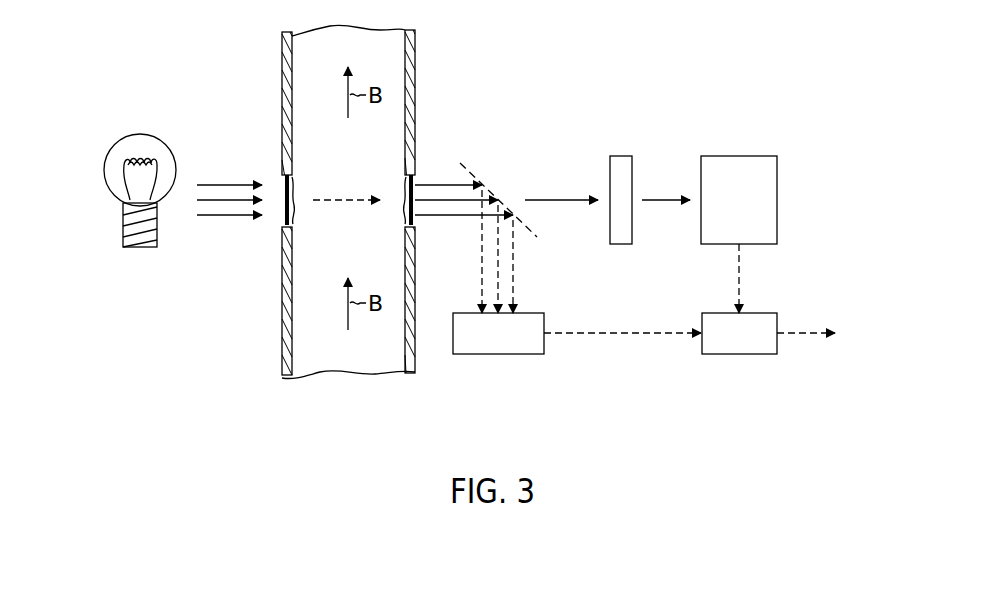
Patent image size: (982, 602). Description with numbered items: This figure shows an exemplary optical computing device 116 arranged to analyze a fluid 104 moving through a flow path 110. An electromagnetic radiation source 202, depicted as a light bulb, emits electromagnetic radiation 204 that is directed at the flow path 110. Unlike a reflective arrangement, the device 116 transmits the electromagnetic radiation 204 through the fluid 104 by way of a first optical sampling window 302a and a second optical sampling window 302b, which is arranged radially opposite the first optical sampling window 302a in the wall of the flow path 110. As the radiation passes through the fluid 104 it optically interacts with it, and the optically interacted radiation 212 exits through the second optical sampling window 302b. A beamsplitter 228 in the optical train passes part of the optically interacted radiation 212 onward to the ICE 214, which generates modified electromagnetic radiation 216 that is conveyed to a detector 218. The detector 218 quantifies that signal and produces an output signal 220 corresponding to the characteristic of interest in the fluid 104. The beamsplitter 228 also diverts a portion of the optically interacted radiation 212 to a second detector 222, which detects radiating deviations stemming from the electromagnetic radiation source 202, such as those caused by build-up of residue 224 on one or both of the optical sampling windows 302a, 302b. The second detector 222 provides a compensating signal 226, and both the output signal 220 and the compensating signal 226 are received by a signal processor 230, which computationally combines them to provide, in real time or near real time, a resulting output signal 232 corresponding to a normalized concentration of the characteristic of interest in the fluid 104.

The fluid 104 is at (364, 169).
The flow path 110 is at (416, 48).
The optical computing device 116 is at (573, 106).
The electromagnetic radiation source 202 is at (118, 148).
The electromagnetic radiation 204 is at (224, 184).
The optically interacted radiation 212 is at (443, 183).
The ICE 214 is at (622, 161).
The modified electromagnetic radiation 216 is at (658, 198).
The detector 218 is at (757, 212).
The output signal 220 is at (742, 273).
The second detector 222 is at (516, 345).
The residue 224 is at (294, 221).
The compensating signal 226 is at (576, 335).
The beamsplitter 228 is at (468, 167).
The signal processor 230 is at (757, 345).
The resulting output signal 232 is at (805, 333).
The first optical sampling window 302a is at (284, 222).
The second optical sampling window 302b is at (417, 226).